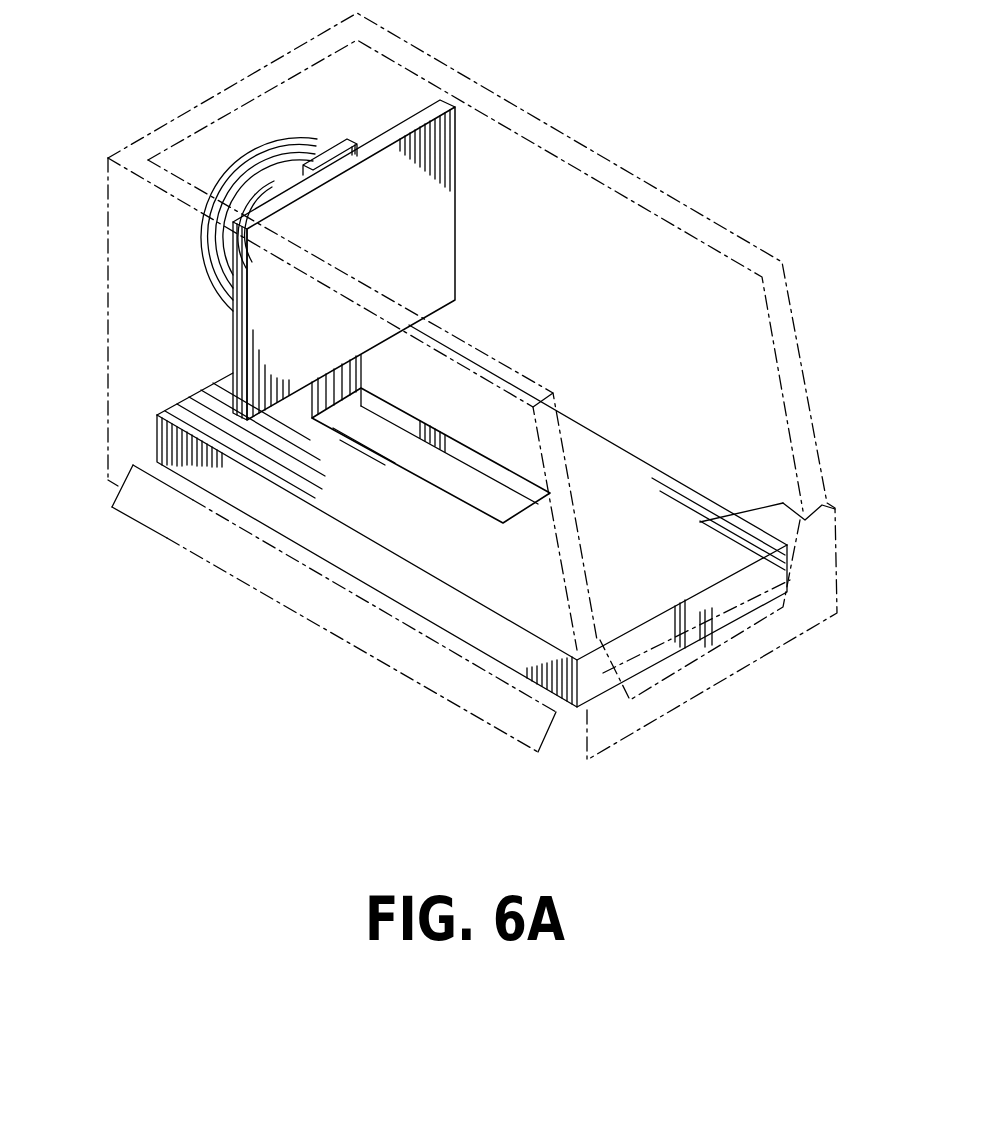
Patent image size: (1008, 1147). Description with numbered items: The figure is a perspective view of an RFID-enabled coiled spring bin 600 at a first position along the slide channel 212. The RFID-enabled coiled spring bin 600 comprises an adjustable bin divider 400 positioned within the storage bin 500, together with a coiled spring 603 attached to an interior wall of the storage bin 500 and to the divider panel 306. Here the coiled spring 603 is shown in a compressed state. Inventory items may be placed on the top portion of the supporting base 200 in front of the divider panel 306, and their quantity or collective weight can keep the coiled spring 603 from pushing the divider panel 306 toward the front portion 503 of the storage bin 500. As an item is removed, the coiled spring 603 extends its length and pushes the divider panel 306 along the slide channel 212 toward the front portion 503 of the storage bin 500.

The RFID-enabled coiled spring bin 600 is at (674, 62).
The storage bin 500 is at (620, 173).
The front portion 503 is at (778, 696).
The supporting base 200 is at (607, 437).
The slide channel 212 is at (428, 423).
The divider panel 306 is at (455, 240).
The adjustable bin divider 400 is at (520, 268).
The coiled spring 603 is at (260, 143).